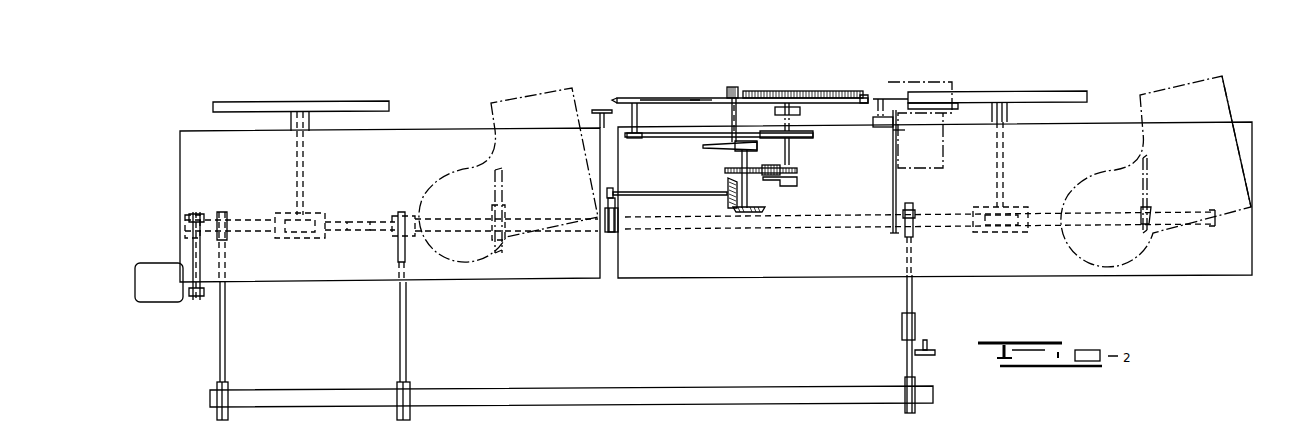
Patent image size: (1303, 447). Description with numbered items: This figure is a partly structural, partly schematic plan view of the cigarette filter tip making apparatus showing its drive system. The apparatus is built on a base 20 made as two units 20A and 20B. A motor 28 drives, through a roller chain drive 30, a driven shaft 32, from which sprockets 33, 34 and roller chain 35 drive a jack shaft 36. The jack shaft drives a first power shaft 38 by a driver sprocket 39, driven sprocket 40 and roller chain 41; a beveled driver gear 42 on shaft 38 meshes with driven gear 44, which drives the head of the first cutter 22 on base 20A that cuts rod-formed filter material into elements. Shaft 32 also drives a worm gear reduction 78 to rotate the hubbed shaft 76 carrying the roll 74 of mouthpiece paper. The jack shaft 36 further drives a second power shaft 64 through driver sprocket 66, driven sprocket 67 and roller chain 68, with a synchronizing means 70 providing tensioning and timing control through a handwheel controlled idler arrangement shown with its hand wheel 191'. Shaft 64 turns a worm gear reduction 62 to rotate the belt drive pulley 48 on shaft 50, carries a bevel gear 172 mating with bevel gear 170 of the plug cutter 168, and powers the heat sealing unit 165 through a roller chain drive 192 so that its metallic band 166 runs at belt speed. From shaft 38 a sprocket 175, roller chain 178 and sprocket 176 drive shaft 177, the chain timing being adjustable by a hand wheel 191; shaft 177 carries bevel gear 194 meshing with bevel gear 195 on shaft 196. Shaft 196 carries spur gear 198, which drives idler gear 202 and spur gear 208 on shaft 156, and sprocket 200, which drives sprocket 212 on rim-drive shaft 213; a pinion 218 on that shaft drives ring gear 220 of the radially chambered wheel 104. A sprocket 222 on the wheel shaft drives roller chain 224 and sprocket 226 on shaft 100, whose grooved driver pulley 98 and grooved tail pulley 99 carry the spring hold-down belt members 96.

The base 20 is at (1254, 170).
The base unit 20A is at (187, 141).
The base unit 20B is at (1240, 126).
The first cutter 22 is at (542, 95).
The motor 28 is at (147, 266).
The roller chain drive 30 is at (192, 252).
The driven shaft 32 is at (260, 218).
The sprocket 33 is at (226, 218).
The sprocket 34 is at (229, 395).
The roller chain 35 is at (226, 348).
The jack shaft 36 is at (282, 393).
The first power shaft 38 is at (550, 220).
The driver sprocket 39 is at (409, 390).
The driven sprocket 40 is at (400, 216).
The roller chain 41 is at (411, 324).
The beveled driver gear 42 is at (494, 212).
The driven gear 44 is at (505, 184).
The drive pulley 48 is at (1066, 99).
The bearinged shaft 50 is at (1005, 167).
The worm gear reduction 62 is at (1015, 208).
The second power shaft 64 is at (838, 226).
The driver sprocket 66 is at (906, 408).
The driven sprocket 67 is at (911, 228).
The roller chain 68 is at (906, 362).
The synchronizing means 70 is at (918, 326).
The roll 74 is at (345, 106).
The hubbed shaft 76 is at (304, 172).
The worm gear reduction 78 is at (316, 218).
The hold-down belt members 96 is at (670, 98).
The grooved driver pulley 98 is at (630, 98).
The grooved tail pulley 99 is at (690, 98).
The shaft 100 is at (638, 112).
The radially chambered wheel 104 is at (840, 88).
The shaft 156 is at (790, 156).
The heat sealing unit 165 is at (893, 126).
The metallic band 166 is at (898, 95).
The cutter 168 is at (1186, 85).
The bevel gear 170 is at (1148, 180).
The bevel gear 172 is at (1152, 214).
The roller chain sprocket 175 is at (615, 235).
The sprocket 176 is at (613, 192).
The shaft 177 is at (697, 193).
The roller chain 178 is at (616, 228).
The hand wheel 191 is at (597, 112).
The lever 191' is at (936, 356).
The roller chain drive 192 is at (895, 191).
The bevel gear 194 is at (728, 200).
The bevel gear 195 is at (735, 215).
The shaft 196 is at (748, 192).
The spur gear 198 is at (726, 172).
The sprocket 200 is at (740, 151).
The idler gear 202 is at (797, 181).
The spur gear 208 is at (782, 170).
The sprocket 212 is at (710, 146).
The rim-drive shaft 213 is at (728, 116).
The pinion 218 is at (736, 87).
The ring gear 220 is at (796, 91).
The roller chain sprocket 222 is at (810, 130).
The roller chain 224 is at (770, 124).
The sprocket 226 is at (646, 138).